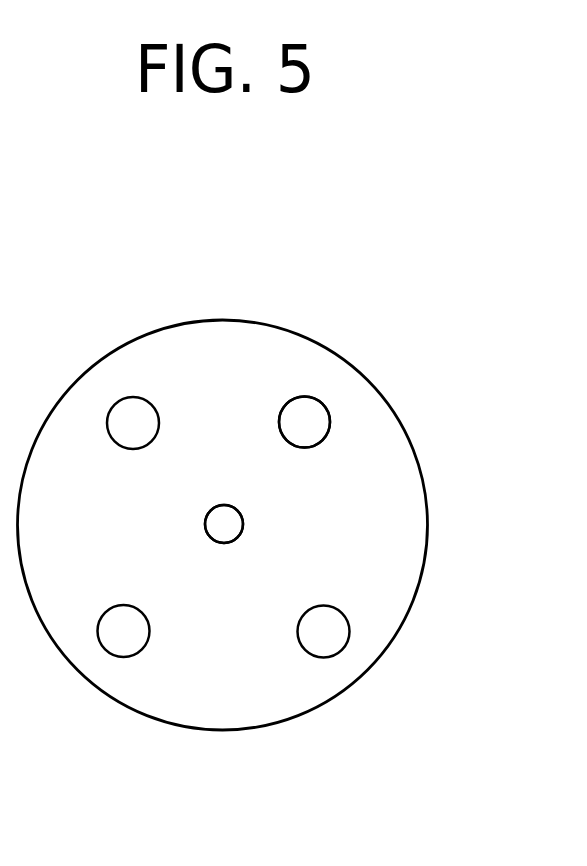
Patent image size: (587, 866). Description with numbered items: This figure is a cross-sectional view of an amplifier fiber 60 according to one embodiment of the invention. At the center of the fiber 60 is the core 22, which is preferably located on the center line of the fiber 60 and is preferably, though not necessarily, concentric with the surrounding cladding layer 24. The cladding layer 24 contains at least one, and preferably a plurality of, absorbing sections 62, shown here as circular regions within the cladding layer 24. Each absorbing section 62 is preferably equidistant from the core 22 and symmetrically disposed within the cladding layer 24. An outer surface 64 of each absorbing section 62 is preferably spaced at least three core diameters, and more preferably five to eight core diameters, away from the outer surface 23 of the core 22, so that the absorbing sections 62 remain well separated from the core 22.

The fiber 60 is at (378, 259).
The absorbing section 62 is at (116, 620).
The outer surface of absorbing section 64 is at (328, 410).
The core 22 is at (227, 520).
The outer surface of core 23 is at (243, 530).
The cladding layer 24 is at (215, 682).